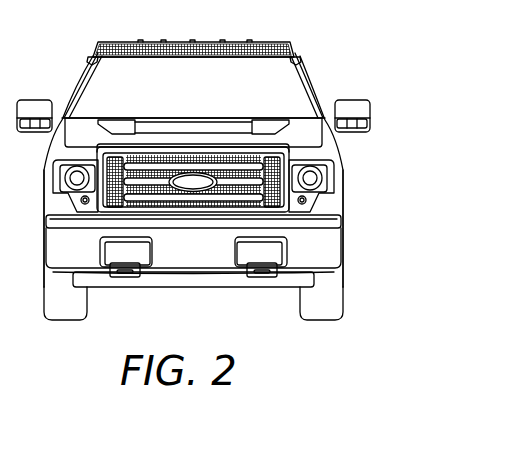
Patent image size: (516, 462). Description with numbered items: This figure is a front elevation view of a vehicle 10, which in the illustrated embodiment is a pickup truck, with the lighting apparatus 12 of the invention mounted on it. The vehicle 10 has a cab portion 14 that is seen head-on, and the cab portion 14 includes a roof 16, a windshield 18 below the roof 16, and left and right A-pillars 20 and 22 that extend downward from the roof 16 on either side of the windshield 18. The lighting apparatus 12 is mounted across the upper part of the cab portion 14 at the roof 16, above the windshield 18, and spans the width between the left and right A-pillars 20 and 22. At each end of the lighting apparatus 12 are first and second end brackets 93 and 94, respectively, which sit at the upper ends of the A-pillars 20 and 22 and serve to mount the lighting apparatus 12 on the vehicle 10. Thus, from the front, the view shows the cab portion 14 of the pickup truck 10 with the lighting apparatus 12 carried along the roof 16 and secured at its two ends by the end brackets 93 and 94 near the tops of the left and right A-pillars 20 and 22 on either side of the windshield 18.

The vehicle 10 is at (366, 58).
The cab portion 14 is at (193, 228).
The lighting apparatus 12 is at (261, 43).
The roof 16 is at (177, 43).
The windshield 18 is at (210, 100).
The left A-pillar 20 is at (315, 90).
The right A-pillar 22 is at (72, 88).
The first end bracket 93 is at (300, 60).
The second end bracket 94 is at (92, 61).